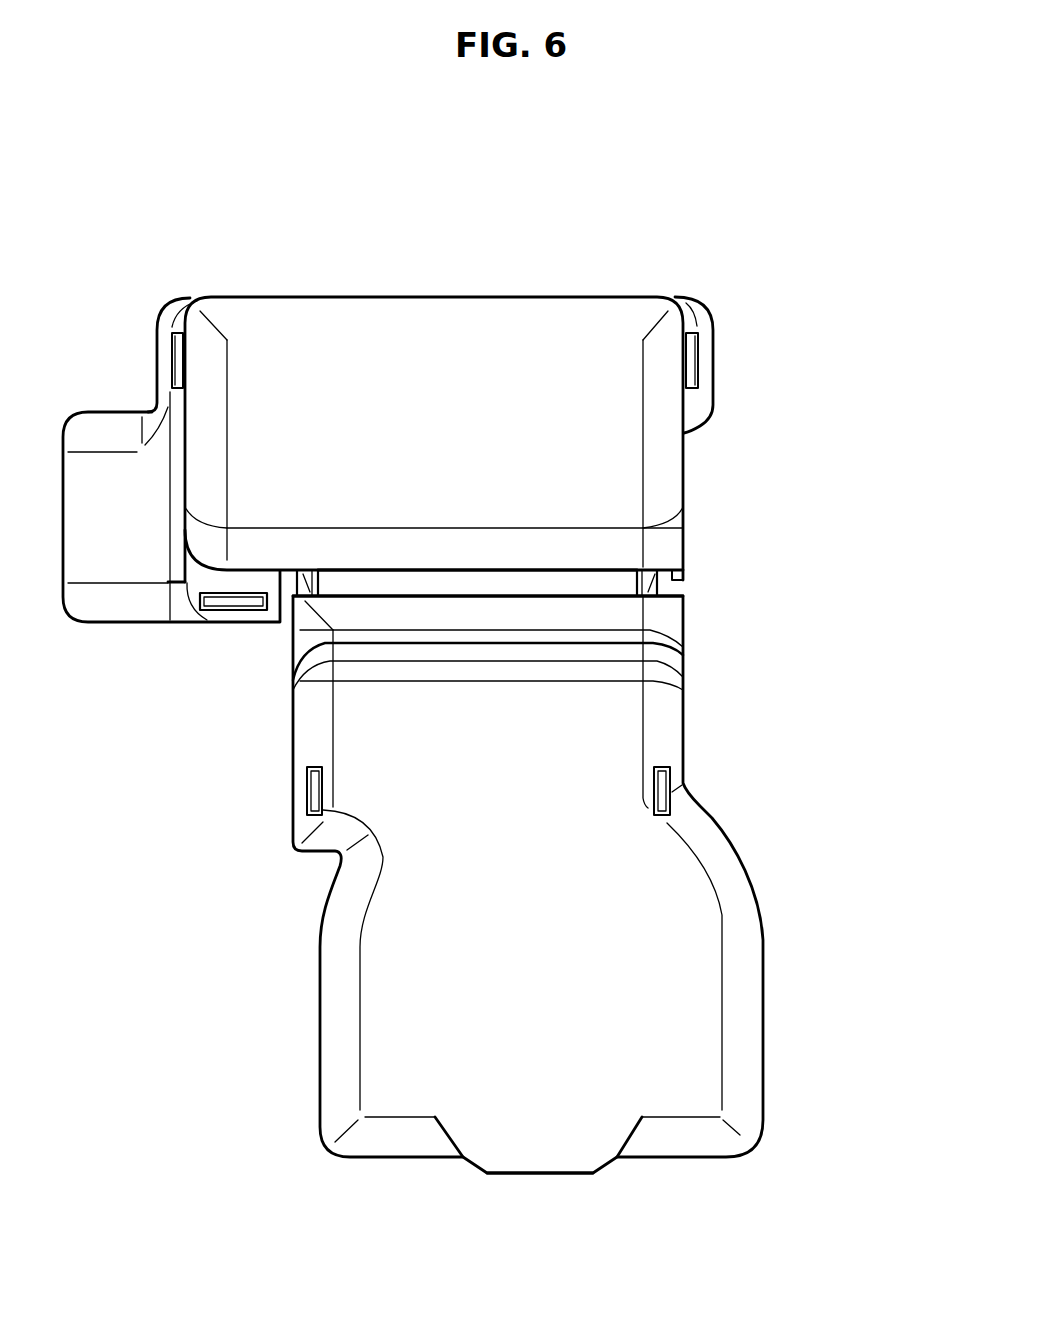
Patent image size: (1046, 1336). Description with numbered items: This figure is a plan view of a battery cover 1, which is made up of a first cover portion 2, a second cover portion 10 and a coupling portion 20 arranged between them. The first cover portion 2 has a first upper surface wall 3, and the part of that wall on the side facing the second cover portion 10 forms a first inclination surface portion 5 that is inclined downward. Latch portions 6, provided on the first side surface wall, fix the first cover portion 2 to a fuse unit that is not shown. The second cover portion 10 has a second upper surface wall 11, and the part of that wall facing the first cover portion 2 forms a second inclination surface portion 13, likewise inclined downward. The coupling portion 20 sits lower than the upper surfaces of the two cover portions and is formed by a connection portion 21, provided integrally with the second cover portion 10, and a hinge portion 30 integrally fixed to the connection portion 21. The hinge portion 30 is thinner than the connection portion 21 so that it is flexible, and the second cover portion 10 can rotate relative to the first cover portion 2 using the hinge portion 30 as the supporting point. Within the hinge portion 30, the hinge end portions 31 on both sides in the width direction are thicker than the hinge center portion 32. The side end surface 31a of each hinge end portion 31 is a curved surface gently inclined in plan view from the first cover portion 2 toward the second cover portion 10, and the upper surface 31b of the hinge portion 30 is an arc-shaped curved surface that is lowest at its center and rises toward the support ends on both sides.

The battery cover 1 is at (225, 200).
The first cover portion 2 is at (693, 468).
The first upper surface wall 3 is at (470, 342).
The first inclination surface portion 5 is at (397, 548).
The latch portions 6 is at (166, 358).
The second cover portion 10 is at (767, 997).
The second upper surface wall 11 is at (650, 1065).
The second inclination surface portion 13 is at (497, 670).
The coupling portion 20 is at (830, 497).
The connection portion 21 is at (518, 617).
The hinge portion 30 is at (487, 567).
The hinge end portions 31 is at (297, 560).
The side end surface 31a is at (300, 583).
The upper surface 31b is at (307, 573).
The hinge center portion 32 is at (440, 588).